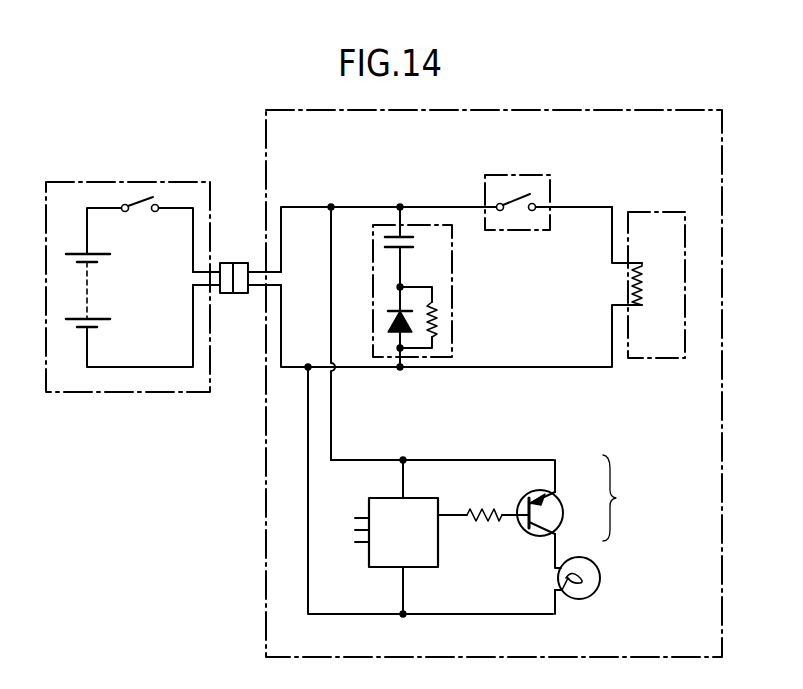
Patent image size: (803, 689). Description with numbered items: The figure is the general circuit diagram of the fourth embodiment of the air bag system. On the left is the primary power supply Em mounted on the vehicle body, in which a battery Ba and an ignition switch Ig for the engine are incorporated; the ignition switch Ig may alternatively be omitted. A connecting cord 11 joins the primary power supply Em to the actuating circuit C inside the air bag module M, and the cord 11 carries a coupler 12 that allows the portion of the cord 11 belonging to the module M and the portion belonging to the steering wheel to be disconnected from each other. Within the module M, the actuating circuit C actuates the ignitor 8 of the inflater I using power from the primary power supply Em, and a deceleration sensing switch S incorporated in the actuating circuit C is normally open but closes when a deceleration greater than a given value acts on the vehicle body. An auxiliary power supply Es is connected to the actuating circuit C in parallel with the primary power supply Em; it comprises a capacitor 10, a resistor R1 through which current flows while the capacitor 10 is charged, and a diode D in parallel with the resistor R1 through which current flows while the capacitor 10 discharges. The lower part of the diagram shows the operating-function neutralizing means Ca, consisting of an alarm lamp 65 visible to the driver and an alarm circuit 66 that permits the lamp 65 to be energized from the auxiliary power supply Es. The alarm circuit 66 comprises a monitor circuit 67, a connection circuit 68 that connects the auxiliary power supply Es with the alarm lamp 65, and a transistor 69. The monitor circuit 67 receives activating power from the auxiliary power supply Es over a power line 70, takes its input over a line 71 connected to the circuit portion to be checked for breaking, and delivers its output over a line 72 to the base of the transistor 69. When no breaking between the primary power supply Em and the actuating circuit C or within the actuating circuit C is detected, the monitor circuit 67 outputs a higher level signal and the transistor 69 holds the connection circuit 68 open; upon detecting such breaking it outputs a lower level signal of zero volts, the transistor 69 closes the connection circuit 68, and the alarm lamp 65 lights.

The primary power supply Em is at (106, 395).
The ignition switch Ig is at (138, 200).
The battery Ba is at (100, 313).
The coupler 12 is at (230, 263).
The connecting cord 11 is at (257, 287).
The air bag module M is at (577, 108).
The deceleration sensing switch S is at (527, 174).
The actuating circuit C is at (587, 214).
The inflater I is at (648, 205).
The ignitor 8 is at (642, 290).
The auxiliary power supply Es is at (453, 288).
The capacitor 10 is at (403, 249).
The diode D is at (388, 325).
The resistor R1 is at (435, 323).
The connection circuit 68 is at (462, 458).
The power line 70 is at (403, 476).
The monitor circuit 67 is at (401, 547).
The input signal line 71 is at (358, 547).
The output signal line 72 is at (457, 516).
The transistor 69 is at (538, 536).
The alarm circuit 66 is at (558, 473).
The alarm lamp 65 is at (580, 556).
The operating-function neutralizing means Ca is at (628, 498).